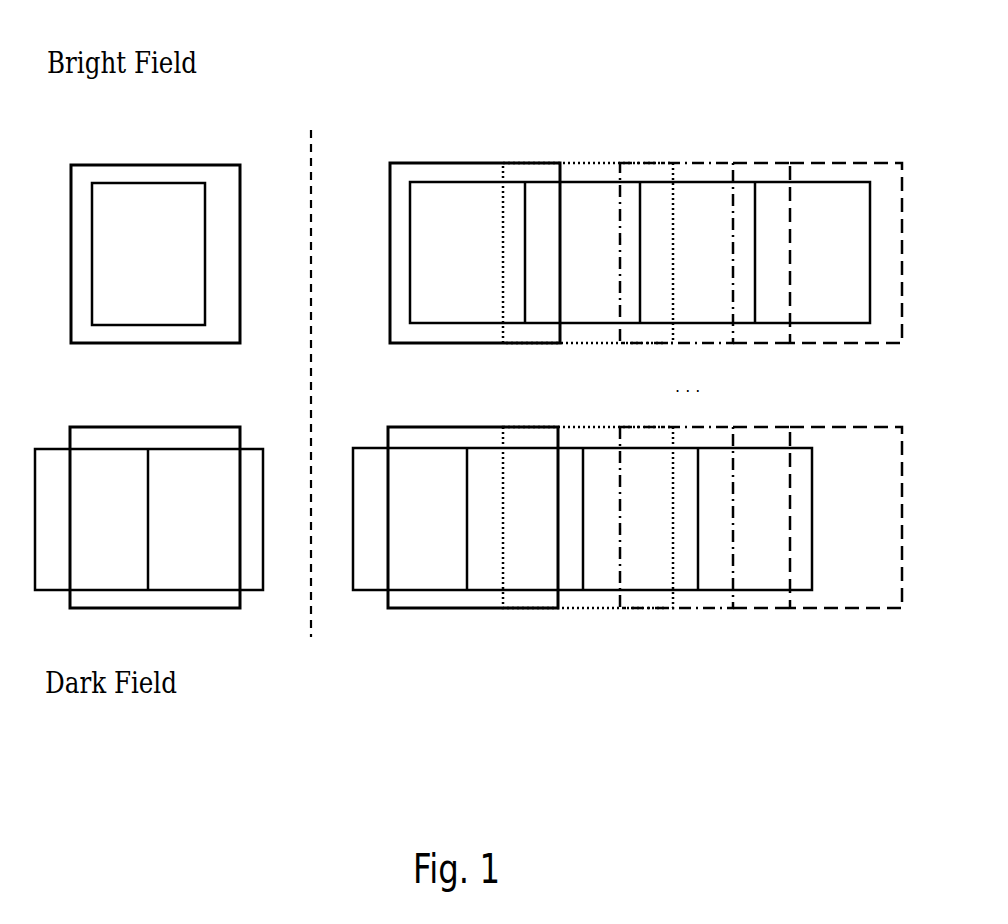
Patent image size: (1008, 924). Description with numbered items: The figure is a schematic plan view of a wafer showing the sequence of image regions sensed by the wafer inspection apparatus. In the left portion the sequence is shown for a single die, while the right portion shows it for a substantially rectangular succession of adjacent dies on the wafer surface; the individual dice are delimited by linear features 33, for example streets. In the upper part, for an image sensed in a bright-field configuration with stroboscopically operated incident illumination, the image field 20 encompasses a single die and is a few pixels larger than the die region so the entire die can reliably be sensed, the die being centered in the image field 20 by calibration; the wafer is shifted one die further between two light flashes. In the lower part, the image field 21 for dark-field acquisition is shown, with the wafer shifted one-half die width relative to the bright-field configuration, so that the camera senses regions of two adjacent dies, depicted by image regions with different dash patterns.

The image field 20 is at (217, 162).
The linear features 33 is at (112, 177).
The image field 21 is at (220, 610).